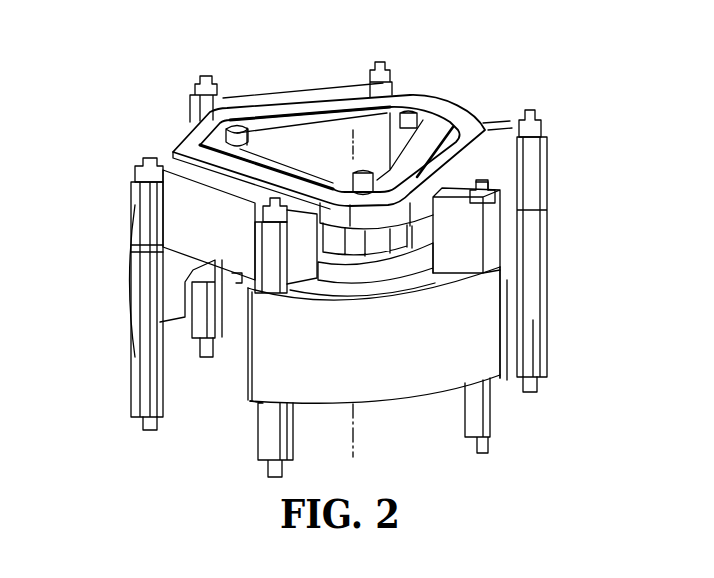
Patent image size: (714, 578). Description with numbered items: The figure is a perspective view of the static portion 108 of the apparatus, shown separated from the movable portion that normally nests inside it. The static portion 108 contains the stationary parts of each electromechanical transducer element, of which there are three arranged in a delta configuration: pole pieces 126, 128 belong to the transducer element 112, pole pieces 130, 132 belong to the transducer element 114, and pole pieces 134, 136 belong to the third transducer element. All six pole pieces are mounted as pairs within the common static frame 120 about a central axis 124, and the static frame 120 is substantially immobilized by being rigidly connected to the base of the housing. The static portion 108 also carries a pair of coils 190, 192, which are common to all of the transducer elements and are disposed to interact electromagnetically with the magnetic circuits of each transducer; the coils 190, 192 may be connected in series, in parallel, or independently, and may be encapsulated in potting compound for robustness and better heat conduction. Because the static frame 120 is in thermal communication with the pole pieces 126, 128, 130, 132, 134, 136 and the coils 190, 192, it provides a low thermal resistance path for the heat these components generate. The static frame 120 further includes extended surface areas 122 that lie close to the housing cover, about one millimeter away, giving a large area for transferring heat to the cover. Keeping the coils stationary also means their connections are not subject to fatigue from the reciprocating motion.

The static portion 108 is at (148, 65).
The electromechanical transducer element 112 is at (201, 221).
The electromechanical transducer element 114 is at (503, 188).
The static frame 120 is at (390, 403).
The extended surface areas 122 is at (458, 360).
The central axis 124 is at (353, 450).
The pole piece 126 is at (171, 151).
The pole piece 128 is at (228, 136).
The pole piece 130 is at (484, 180).
The pole piece 132 is at (428, 137).
The pole piece 134 is at (312, 120).
The pole piece 136 is at (312, 97).
The coil 190 is at (425, 97).
The coil 192 is at (377, 267).